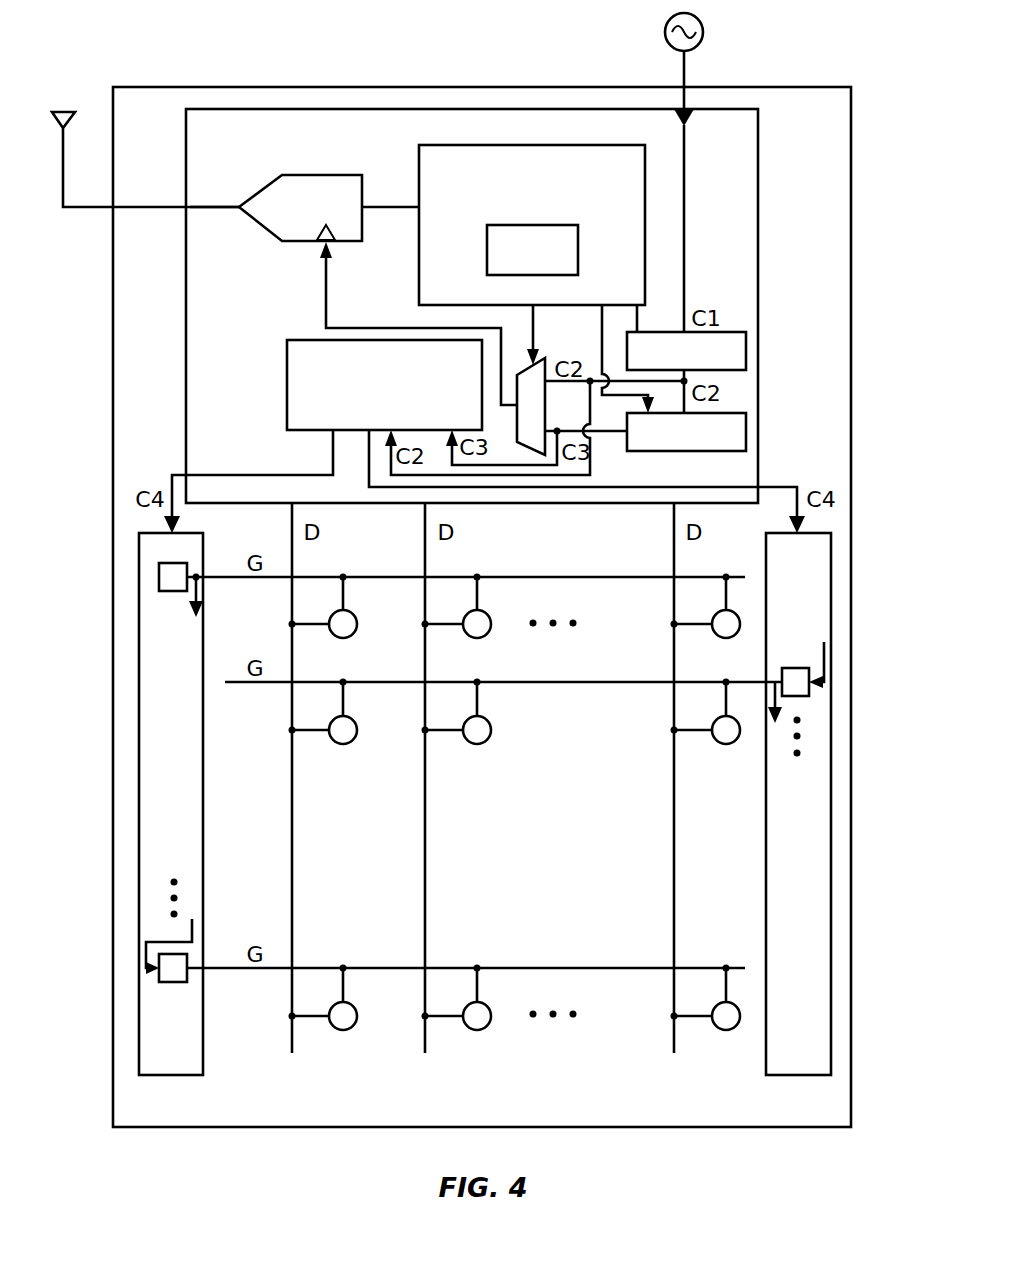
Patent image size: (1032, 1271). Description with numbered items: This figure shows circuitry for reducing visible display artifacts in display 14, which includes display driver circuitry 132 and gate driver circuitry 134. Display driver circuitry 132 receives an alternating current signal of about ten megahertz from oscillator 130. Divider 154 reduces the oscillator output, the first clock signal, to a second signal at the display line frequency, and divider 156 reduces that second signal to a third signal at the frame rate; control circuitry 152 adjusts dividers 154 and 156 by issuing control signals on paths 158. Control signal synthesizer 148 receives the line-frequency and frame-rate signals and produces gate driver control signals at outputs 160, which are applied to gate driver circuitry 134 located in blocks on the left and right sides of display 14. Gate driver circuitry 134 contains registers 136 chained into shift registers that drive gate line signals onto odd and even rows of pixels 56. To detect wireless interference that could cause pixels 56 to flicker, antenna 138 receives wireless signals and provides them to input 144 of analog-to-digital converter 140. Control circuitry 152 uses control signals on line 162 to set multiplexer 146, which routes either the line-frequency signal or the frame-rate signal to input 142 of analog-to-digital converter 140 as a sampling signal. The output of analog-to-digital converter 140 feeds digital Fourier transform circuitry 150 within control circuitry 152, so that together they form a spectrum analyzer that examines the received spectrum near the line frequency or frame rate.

The display 14 is at (432, 87).
The pixels 56 is at (353, 634).
The oscillator 130 is at (703, 32).
The display driver circuitry 132 is at (758, 207).
The gate driver circuitry 134 is at (139, 781).
The registers 136 is at (168, 592).
The antenna 138 is at (63, 112).
The analog-to-digital converter 140 is at (320, 175).
The input of analog-to-digital converter 142 is at (326, 280).
The input of analog-to-digital converter 144 is at (212, 207).
The multiplexer 146 is at (542, 362).
The control signal synthesizer 148 is at (287, 385).
The digital Fourier transform circuitry 150 is at (505, 275).
The control circuitry 152 is at (510, 145).
The divider 154 is at (726, 330).
The divider 156 is at (672, 451).
The paths 158 is at (638, 310).
The outputs 160 is at (333, 445).
The line 162 is at (533, 312).